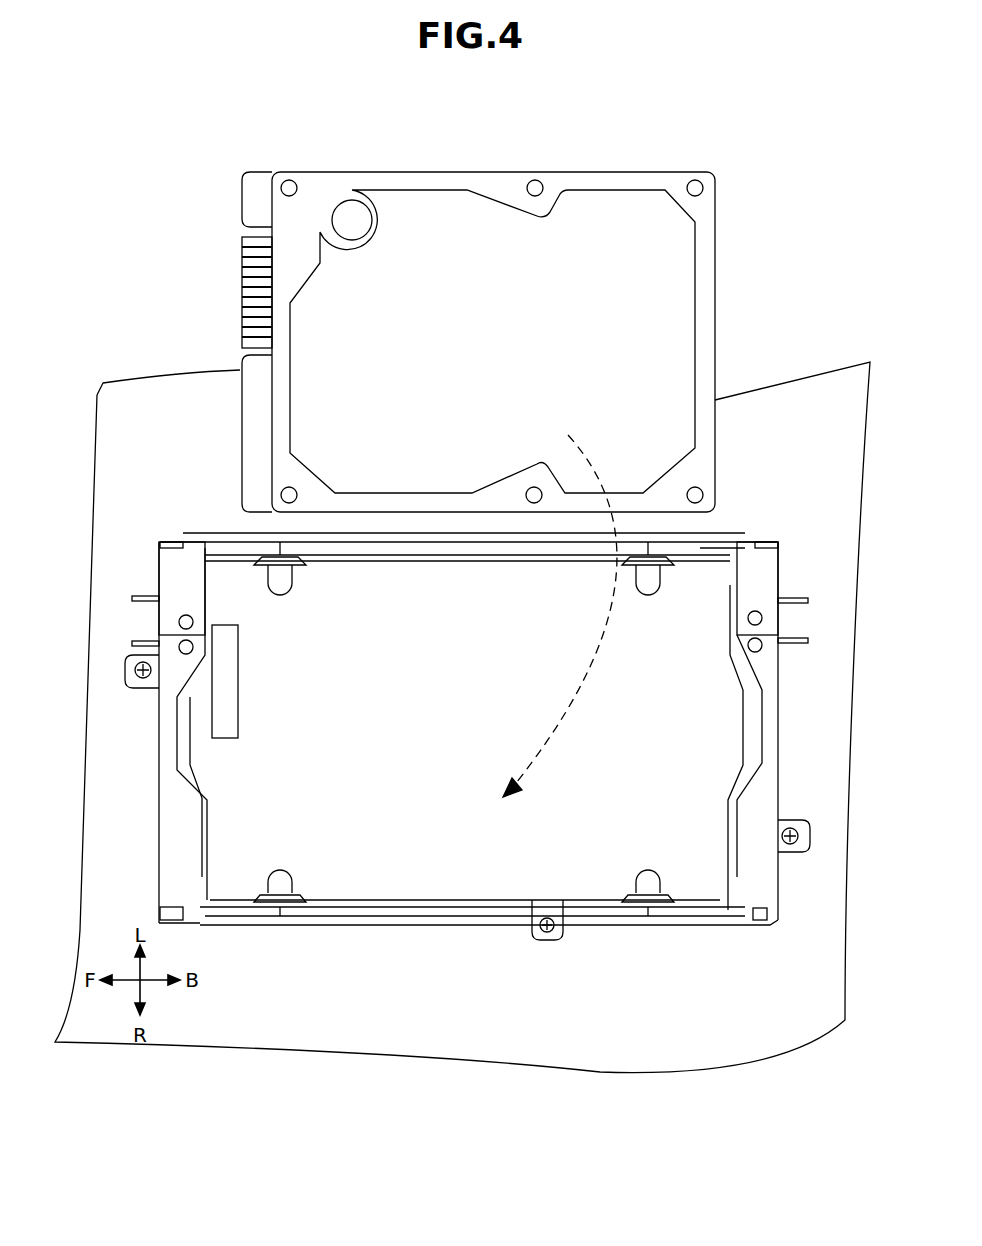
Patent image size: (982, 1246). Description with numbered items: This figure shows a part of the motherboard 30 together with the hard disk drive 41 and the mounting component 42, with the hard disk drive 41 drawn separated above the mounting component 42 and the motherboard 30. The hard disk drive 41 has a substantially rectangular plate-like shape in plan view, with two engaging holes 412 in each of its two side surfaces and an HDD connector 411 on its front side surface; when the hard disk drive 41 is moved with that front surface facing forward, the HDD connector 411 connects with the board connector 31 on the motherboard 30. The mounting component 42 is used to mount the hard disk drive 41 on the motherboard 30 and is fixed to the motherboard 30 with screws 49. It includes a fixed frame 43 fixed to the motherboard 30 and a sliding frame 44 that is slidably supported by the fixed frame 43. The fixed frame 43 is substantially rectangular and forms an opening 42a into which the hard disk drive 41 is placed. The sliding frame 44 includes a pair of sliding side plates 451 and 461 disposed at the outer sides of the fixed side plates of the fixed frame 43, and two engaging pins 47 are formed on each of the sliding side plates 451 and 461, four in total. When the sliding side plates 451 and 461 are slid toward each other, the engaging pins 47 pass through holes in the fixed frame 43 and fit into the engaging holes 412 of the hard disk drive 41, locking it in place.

The motherboard 30 is at (797, 400).
The board connector 31 is at (218, 715).
The hard disk drive 41 is at (408, 331).
The HDD connector 411 is at (250, 258).
The engaging holes 412 is at (318, 180).
The mounting component 42 is at (447, 742).
The opening 42a is at (248, 585).
The fixed frame 43 is at (712, 550).
The sliding frame 44 is at (780, 545).
The sliding side plate 451 is at (452, 527).
The sliding side plate 461 is at (423, 930).
The engaging pins 47 is at (290, 553).
The screws 49 is at (128, 668).